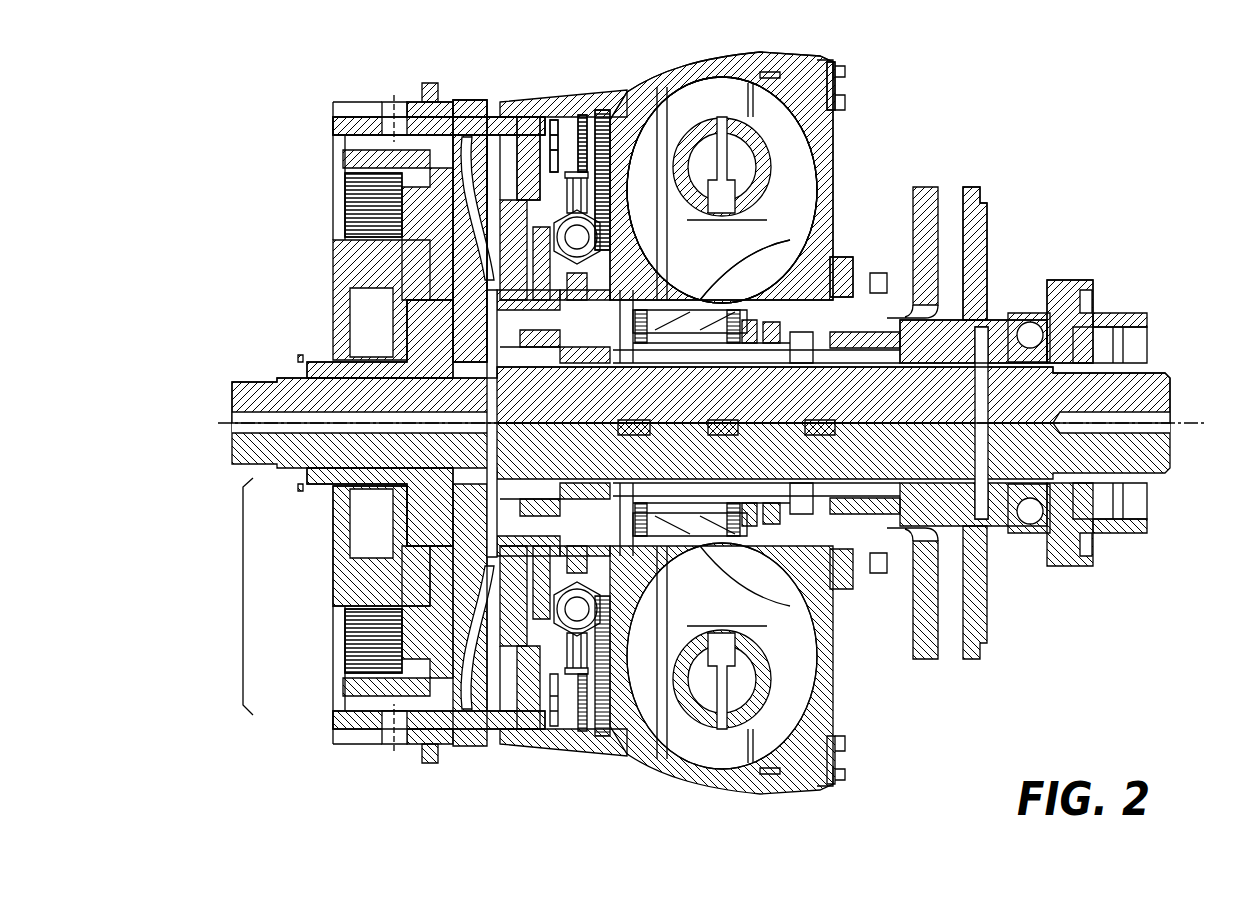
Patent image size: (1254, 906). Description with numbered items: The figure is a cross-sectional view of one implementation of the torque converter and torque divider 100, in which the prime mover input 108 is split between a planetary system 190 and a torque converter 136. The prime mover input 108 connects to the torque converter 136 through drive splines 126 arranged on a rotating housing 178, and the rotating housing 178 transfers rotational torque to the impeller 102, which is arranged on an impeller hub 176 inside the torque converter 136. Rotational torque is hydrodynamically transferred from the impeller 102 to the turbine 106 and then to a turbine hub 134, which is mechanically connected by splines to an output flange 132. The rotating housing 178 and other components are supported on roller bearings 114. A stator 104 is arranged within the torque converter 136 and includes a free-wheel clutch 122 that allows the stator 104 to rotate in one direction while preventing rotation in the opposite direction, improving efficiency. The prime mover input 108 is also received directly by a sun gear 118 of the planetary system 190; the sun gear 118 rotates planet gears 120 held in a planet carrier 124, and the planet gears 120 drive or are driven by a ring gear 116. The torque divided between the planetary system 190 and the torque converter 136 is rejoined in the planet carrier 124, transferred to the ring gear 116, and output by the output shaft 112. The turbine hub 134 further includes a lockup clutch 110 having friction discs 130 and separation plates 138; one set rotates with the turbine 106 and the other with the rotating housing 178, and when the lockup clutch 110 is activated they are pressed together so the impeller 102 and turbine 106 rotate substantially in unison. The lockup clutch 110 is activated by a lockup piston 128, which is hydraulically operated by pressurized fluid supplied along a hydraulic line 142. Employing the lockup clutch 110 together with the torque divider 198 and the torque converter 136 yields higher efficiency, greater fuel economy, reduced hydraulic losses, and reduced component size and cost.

The torque converter and torque divider 100 is at (293, 107).
The impeller 102 is at (795, 162).
The stator 104 is at (735, 252).
The turbine 106 is at (645, 138).
The prime mover input 108 is at (163, 384).
The lockup clutch 110 is at (548, 137).
The output shaft 112 is at (1068, 388).
The roller bearings 114 is at (1038, 345).
The ring gear 116 is at (358, 215).
The sun gear 118 is at (320, 470).
The planet gears 120 is at (340, 608).
The free-wheel clutch 122 is at (822, 275).
The planet carrier 124 is at (373, 550).
The drive splines 126 is at (348, 738).
The lockup piston 128 is at (540, 130).
The friction discs 130 is at (608, 175).
The output flange 132 is at (437, 352).
The turbine hub 134 is at (437, 323).
The torque converter 136 is at (855, 101).
The separation plates 138 is at (578, 120).
The hydraulic line 142 is at (482, 200).
The impeller hub 176 is at (822, 320).
The rotating housing 178 is at (420, 104).
The planetary system 190 is at (243, 597).
The torque divider 198 is at (315, 181).